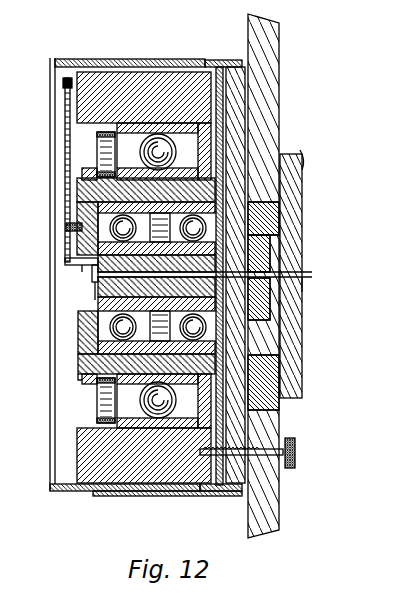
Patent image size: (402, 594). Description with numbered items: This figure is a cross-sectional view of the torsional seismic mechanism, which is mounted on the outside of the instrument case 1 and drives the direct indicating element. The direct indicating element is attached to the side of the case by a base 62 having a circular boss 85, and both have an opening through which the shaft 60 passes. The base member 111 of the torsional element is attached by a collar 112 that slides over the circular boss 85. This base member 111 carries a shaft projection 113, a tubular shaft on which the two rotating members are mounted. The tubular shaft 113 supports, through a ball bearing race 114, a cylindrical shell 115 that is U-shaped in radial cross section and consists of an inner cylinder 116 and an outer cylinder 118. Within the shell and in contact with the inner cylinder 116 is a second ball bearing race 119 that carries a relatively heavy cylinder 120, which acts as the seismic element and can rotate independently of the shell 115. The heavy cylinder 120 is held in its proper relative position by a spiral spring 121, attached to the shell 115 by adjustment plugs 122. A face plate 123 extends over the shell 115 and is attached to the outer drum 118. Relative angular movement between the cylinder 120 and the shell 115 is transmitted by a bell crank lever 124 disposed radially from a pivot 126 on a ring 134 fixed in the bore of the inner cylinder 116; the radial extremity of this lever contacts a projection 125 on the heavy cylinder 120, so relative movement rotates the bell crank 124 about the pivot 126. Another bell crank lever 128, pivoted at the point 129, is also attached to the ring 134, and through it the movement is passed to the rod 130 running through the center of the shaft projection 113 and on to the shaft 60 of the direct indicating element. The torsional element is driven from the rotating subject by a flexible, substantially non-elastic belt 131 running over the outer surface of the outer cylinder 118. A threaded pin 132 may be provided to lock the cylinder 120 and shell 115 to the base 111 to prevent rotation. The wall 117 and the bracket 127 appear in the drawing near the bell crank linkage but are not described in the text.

The instrument case 1 is at (281, 58).
The shaft 60 is at (300, 280).
The base 62 is at (284, 200).
The circular boss 85 is at (258, 243).
The base member 111 is at (301, 152).
The collar 112 is at (240, 211).
The shaft projection 113 is at (104, 283).
The ball bearing race 114 is at (110, 328).
The cylindrical shell 115 is at (82, 360).
The inner cylinder 116 is at (78, 378).
The housing wall 117 is at (228, 392).
The outer cylinder 118 is at (221, 66).
The ball bearing race 119 is at (142, 153).
The heavy cylinder 120 is at (88, 78).
The spiral spring 121 is at (100, 152).
The adjustment plugs 122 is at (91, 172).
The face plate 123 is at (55, 110).
The bell crank lever 124 is at (70, 138).
The projection 125 is at (66, 79).
The pivot 126 is at (68, 226).
The pointer bracket 127 is at (66, 261).
The bell crank lever 128 is at (82, 266).
The pivot point 129 is at (94, 270).
The rod 130 is at (263, 272).
The belt 131 is at (176, 60).
The threaded pin 132 is at (253, 470).
The ring 134 is at (86, 323).